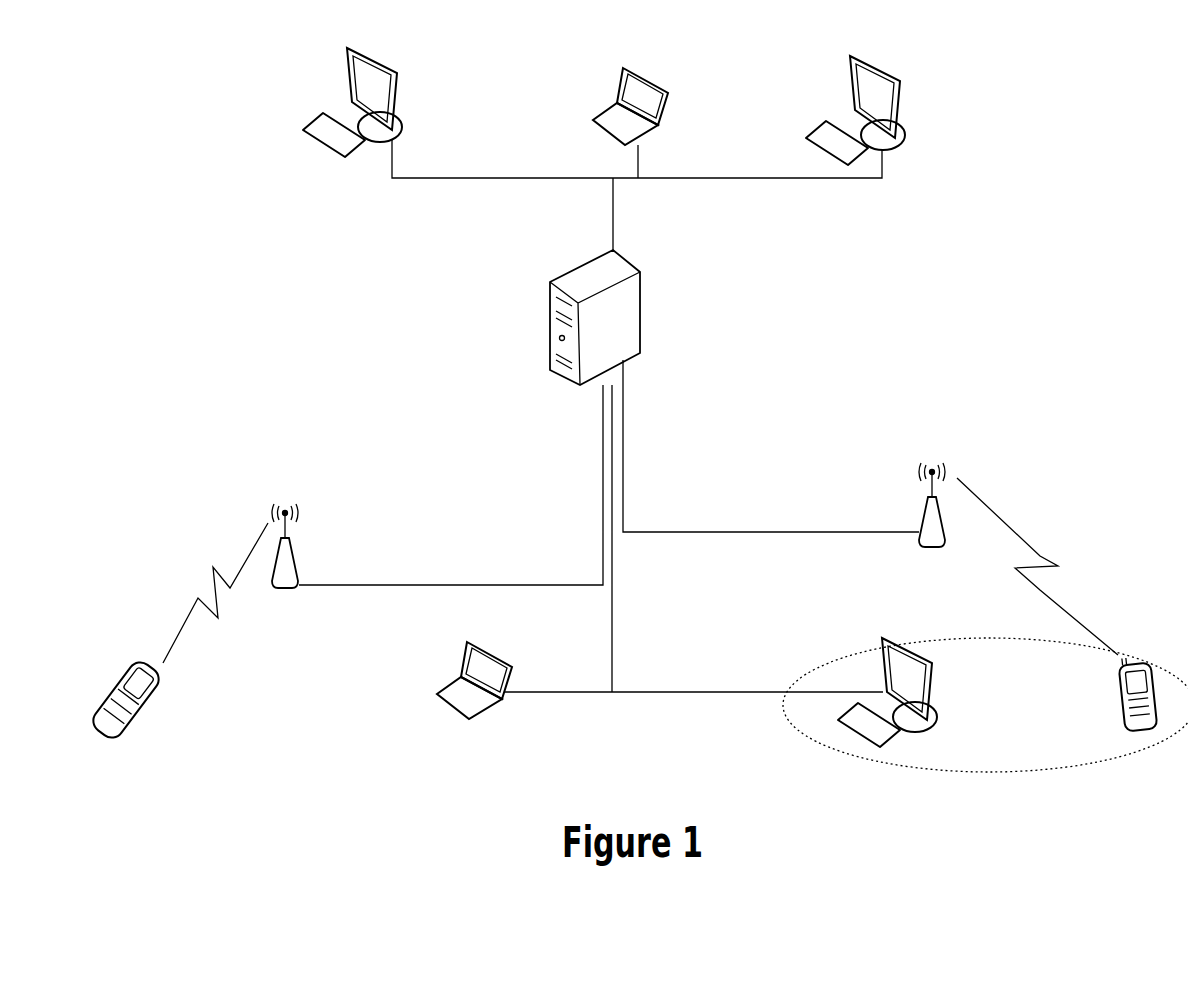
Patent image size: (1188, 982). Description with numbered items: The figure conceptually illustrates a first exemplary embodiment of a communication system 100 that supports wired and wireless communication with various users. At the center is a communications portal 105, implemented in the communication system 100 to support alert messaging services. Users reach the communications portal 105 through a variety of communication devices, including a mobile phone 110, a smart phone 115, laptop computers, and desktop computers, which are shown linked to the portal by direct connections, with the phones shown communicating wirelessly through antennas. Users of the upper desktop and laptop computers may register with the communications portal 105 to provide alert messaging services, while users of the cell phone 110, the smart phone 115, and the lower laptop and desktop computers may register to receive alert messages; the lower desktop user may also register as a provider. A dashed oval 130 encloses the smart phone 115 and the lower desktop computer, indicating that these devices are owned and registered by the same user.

The communication system 100 is at (1050, 68).
The communications portal 105 is at (640, 325).
The mobile phone 110 is at (130, 737).
The smart phone 115 is at (1118, 710).
The dashed oval 130 is at (1012, 773).